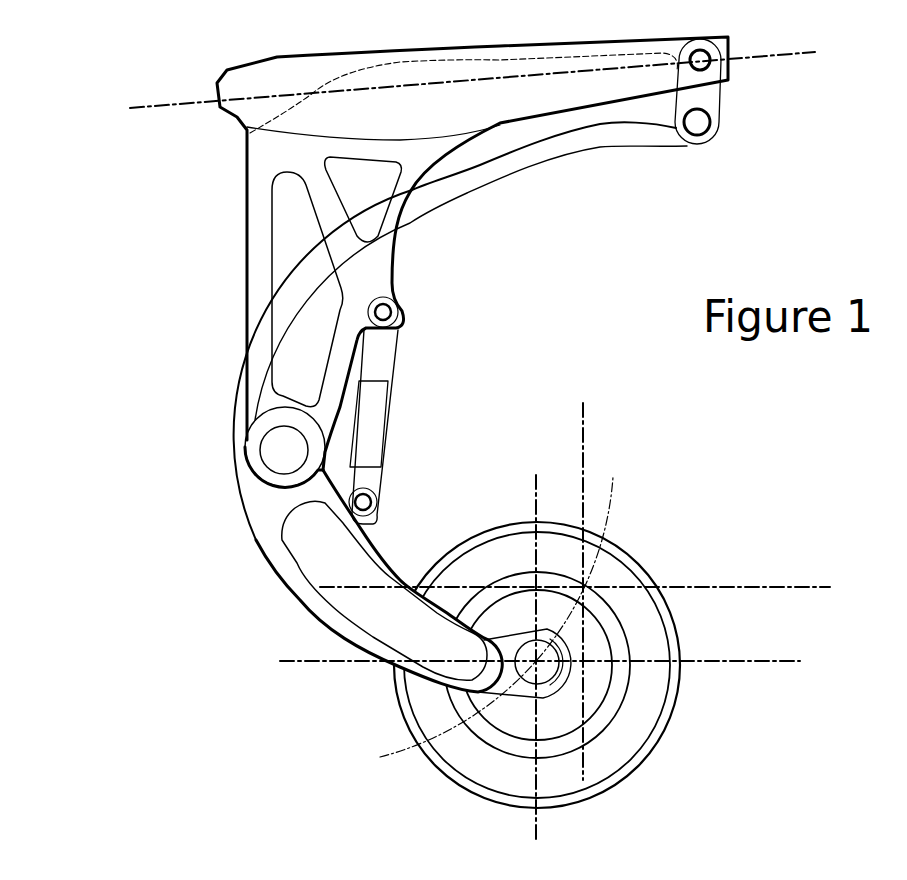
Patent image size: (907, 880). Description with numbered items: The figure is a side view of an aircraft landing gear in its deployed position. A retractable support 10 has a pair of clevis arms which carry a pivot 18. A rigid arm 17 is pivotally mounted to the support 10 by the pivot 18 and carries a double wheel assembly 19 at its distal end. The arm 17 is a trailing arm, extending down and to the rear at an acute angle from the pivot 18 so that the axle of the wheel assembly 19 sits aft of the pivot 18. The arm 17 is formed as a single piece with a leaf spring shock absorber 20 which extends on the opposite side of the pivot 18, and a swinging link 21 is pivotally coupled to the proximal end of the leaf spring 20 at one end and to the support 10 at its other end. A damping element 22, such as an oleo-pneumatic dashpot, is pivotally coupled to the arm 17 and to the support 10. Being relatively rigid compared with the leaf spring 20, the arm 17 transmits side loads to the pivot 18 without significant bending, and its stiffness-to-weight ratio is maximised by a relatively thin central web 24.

The retractable support 10 is at (255, 187).
The rigid arm 17 is at (282, 560).
The pivot 18 is at (275, 453).
The double wheel assembly 19 is at (647, 705).
The leaf spring shock absorber 20 is at (430, 198).
The swinging link 21 is at (713, 92).
The damping element 22 is at (372, 412).
The central web 24 is at (372, 605).